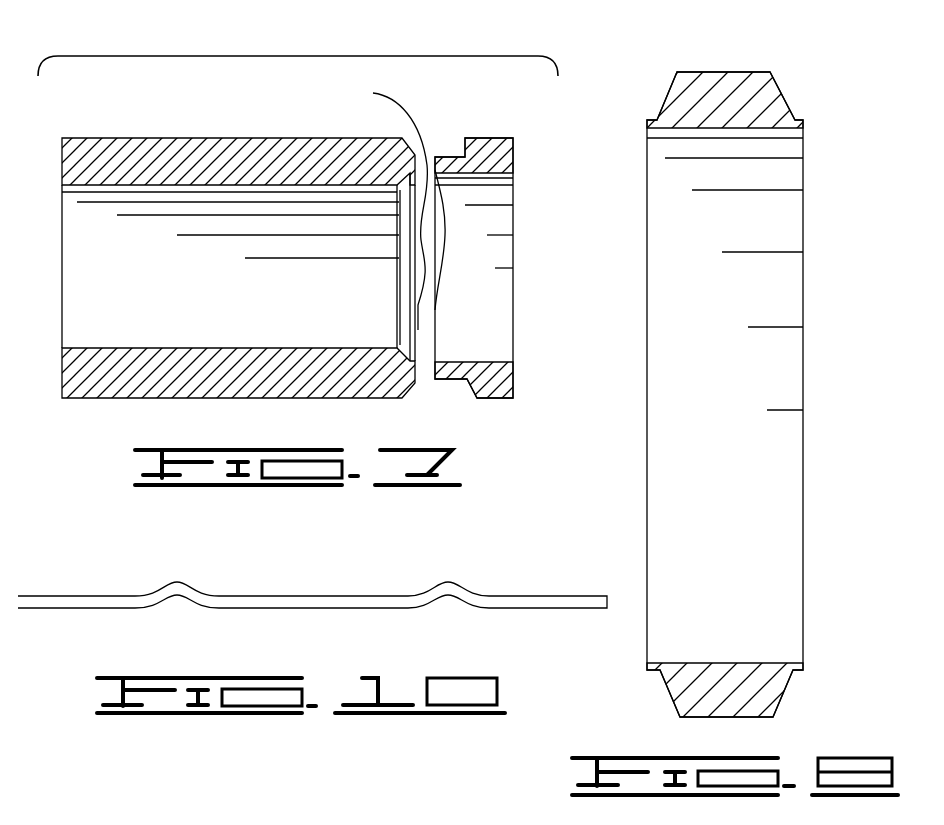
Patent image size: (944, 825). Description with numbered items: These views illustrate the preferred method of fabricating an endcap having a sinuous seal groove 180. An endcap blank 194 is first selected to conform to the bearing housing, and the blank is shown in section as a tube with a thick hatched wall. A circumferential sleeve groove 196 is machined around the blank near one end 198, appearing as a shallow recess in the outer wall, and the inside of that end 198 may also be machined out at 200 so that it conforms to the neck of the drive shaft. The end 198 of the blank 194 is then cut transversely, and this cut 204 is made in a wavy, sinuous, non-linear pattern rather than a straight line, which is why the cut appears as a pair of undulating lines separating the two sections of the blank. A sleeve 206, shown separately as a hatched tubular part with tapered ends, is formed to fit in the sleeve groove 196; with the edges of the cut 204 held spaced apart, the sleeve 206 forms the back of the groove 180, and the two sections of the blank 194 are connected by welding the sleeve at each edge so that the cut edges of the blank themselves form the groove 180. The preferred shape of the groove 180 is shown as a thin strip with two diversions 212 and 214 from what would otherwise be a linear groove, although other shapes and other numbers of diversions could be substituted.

In FIG. 10, the sinuous groove 180 is at (300, 603).
In FIG. 7, the endcap blank 194 is at (130, 398).
In FIG. 7, the circumferential sleeve groove 196 is at (443, 157).
In FIG. 7, the end 198 is at (513, 162).
In FIG. 7, the machined-out inside 200 is at (468, 362).
In FIG. 7, the cut 204 is at (382, 206).
In FIG. 8, the sleeve 206 is at (722, 70).
In FIG. 10, the diversion 212 is at (175, 582).
In FIG. 10, the diversion 214 is at (450, 582).